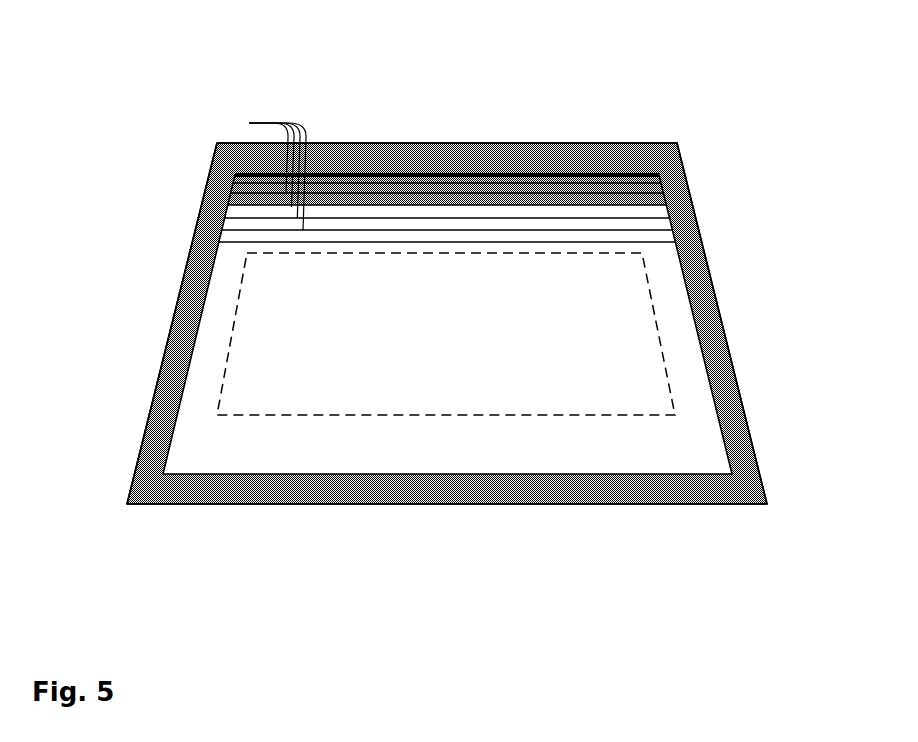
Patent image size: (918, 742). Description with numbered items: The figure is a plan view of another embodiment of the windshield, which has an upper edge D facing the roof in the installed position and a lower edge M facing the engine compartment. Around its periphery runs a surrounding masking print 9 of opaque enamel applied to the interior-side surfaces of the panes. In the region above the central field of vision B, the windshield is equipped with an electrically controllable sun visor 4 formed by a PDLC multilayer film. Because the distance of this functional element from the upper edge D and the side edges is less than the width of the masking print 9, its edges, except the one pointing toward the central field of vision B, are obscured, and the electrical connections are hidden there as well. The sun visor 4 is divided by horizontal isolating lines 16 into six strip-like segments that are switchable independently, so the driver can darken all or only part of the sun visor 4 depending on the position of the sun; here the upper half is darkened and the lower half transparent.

The upper edge D is at (477, 143).
The lower edge M is at (582, 510).
The masking print 9 is at (710, 293).
The electrically controllable sun visor 4 is at (248, 201).
The isolating lines 16 is at (263, 170).
The central field of vision B is at (235, 317).